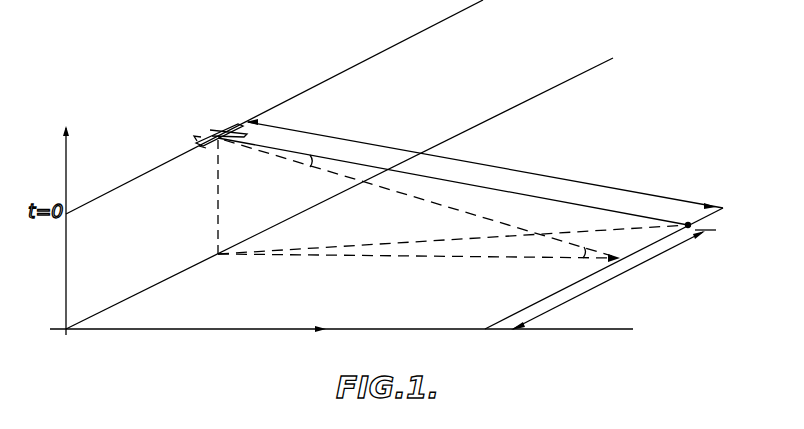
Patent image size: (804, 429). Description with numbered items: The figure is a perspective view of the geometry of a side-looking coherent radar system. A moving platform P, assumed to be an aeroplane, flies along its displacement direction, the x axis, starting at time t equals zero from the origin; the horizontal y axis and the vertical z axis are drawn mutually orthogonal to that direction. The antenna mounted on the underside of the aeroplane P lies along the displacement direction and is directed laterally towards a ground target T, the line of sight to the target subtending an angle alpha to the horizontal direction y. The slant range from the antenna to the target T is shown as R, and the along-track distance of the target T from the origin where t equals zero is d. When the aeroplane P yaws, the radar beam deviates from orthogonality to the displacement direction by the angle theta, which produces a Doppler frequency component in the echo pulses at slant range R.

The moving platform P is at (205, 128).
The slant range R is at (507, 168).
The ground target T is at (688, 222).
The along-track distance of target d is at (622, 270).
The z axis z is at (56, 230).
The y axis y is at (341, 344).